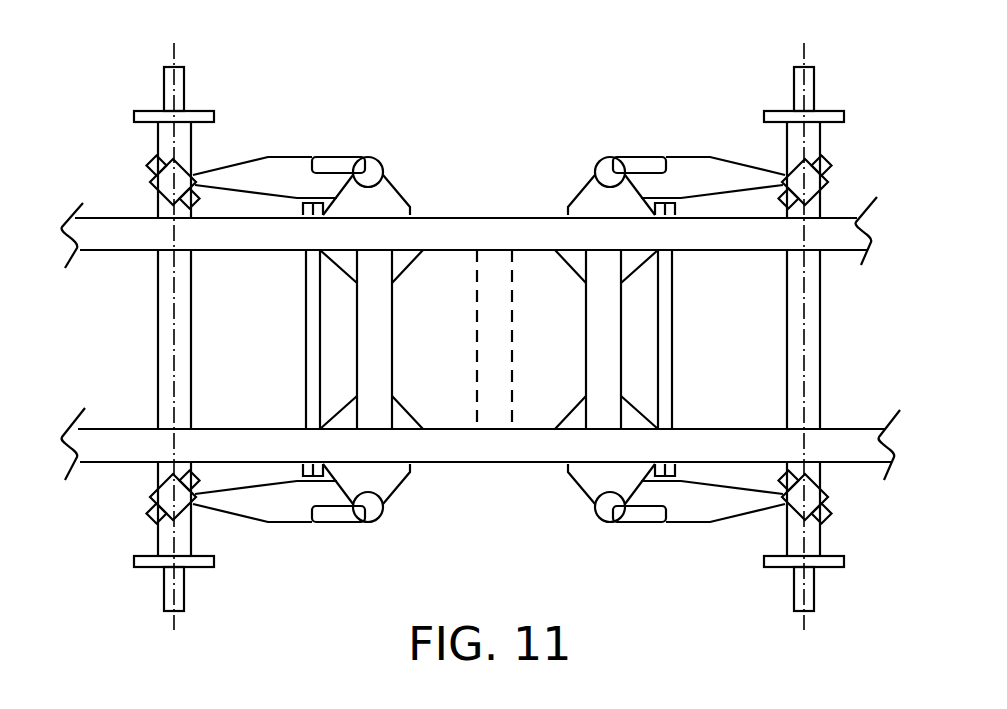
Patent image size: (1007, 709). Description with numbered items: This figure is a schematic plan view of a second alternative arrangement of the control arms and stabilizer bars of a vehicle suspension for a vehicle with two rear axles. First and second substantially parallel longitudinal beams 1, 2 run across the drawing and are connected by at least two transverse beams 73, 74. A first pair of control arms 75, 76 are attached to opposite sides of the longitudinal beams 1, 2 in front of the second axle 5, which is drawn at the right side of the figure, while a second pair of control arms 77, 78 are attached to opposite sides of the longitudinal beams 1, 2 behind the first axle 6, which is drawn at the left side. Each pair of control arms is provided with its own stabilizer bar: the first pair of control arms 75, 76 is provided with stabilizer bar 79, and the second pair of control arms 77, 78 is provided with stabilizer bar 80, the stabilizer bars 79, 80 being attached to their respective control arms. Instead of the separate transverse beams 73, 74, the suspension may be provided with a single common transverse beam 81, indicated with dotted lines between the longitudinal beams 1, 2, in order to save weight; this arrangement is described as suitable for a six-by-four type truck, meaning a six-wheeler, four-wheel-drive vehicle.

The first longitudinal beam 1 is at (493, 230).
The second longitudinal beam 2 is at (473, 448).
The second axle 5 is at (797, 83).
The first axle 6 is at (165, 83).
The transverse beam 73 is at (602, 417).
The transverse beam 74 is at (375, 413).
The control arm 75 is at (723, 510).
The control arm 76 is at (685, 175).
The control arm 77 is at (230, 505).
The control arm 78 is at (273, 178).
The stabilizer bar 79 is at (667, 415).
The stabilizer bar 80 is at (312, 377).
The common transverse beam 81 is at (490, 323).